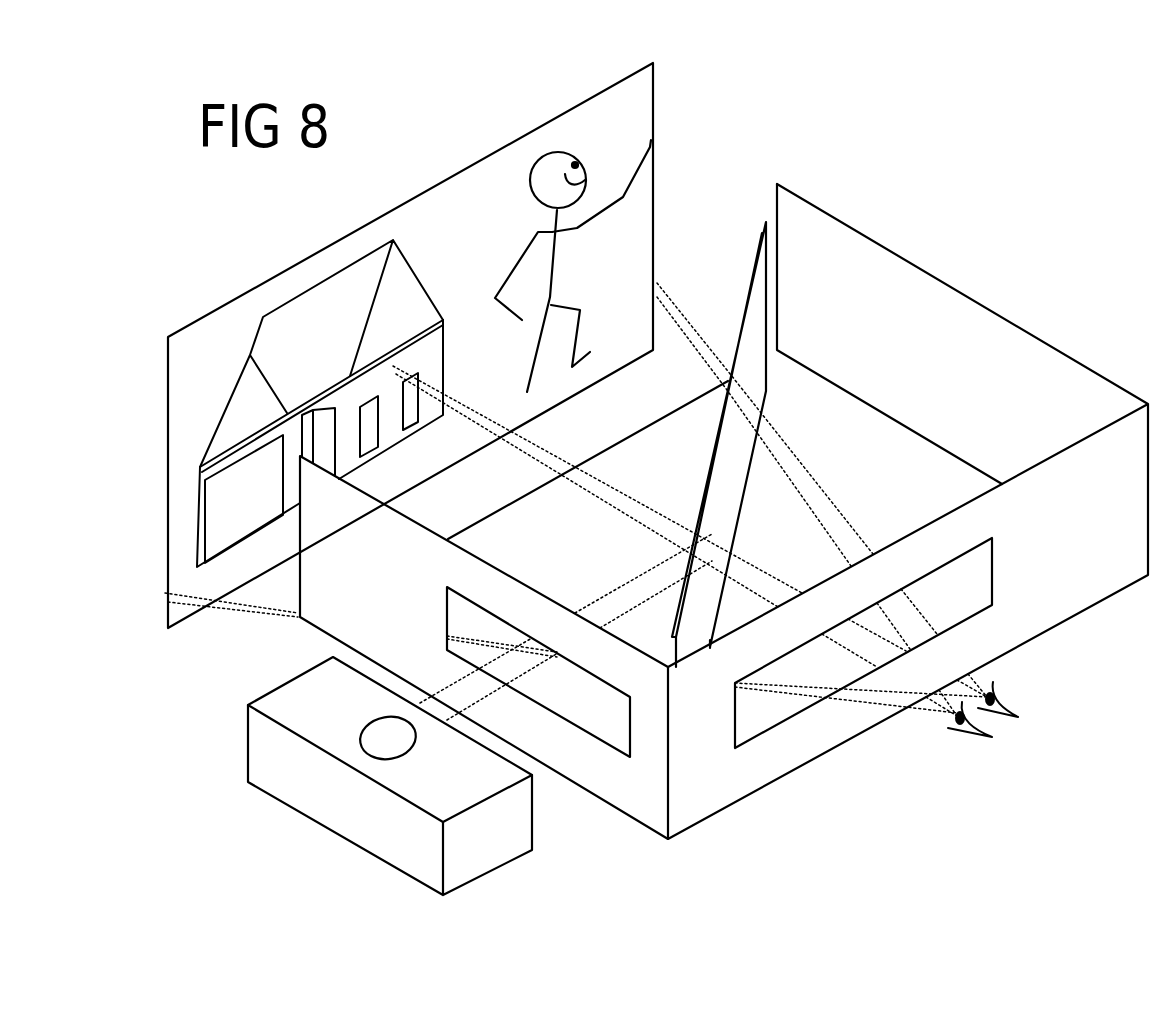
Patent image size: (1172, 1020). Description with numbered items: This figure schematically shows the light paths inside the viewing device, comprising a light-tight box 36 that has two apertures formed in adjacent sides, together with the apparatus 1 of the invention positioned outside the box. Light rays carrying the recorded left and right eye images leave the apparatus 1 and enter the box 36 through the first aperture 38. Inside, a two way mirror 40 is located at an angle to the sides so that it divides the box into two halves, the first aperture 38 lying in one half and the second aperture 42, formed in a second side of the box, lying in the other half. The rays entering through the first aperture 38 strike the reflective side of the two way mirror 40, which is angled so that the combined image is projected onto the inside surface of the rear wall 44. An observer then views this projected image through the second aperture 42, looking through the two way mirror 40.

The apparatus 1 is at (316, 787).
The box 36 is at (1015, 311).
The first aperture 38 is at (465, 628).
The two way mirror 40 is at (733, 448).
The second aperture 42 is at (964, 592).
The rear wall 44 is at (626, 131).